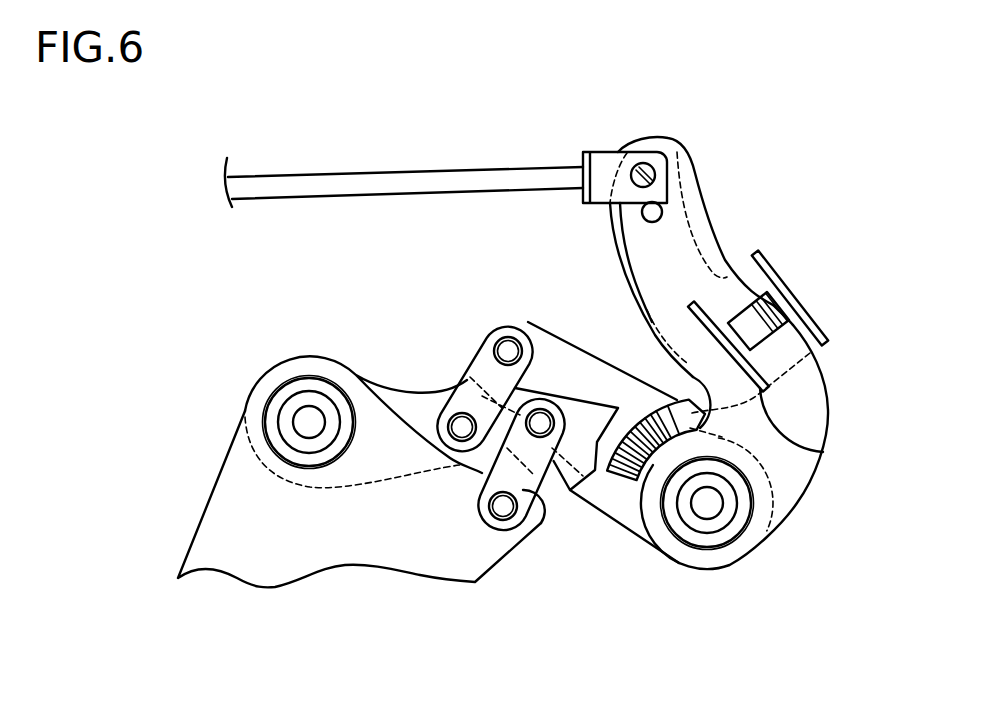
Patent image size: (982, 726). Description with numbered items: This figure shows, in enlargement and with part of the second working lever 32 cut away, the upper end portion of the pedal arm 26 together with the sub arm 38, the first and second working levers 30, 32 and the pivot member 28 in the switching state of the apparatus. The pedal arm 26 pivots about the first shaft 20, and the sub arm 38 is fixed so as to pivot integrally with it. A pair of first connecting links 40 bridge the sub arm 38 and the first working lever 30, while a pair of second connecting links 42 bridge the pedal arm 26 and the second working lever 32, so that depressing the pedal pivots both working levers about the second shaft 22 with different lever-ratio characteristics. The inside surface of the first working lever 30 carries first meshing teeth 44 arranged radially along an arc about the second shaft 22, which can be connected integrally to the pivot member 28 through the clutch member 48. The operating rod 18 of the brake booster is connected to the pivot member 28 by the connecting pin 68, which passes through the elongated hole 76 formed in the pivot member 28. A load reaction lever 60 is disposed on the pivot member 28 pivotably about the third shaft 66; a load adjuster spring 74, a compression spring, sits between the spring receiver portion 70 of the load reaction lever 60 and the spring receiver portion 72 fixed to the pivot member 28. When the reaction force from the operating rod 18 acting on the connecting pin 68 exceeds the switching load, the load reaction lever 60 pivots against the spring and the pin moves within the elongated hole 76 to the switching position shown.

The operating rod 18 is at (327, 185).
The first shaft 20 is at (309, 422).
The second shaft 22 is at (705, 508).
The pedal arm 26 is at (350, 553).
The pivot member 28 is at (630, 230).
The first working lever 30 is at (545, 347).
The second working lever 32 is at (578, 405).
The sub arm 38 is at (391, 395).
The first connecting links 40 is at (465, 397).
The second connecting links 42 is at (540, 523).
The first meshing teeth 44 is at (623, 483).
The clutch member 48 is at (682, 394).
The load reaction lever 60 is at (841, 349).
The third shaft 66 is at (658, 211).
The connecting pin 68 is at (627, 168).
The spring receiver portion 70 is at (820, 330).
The spring receiver portion 72 is at (825, 452).
The load adjuster spring 74 is at (792, 303).
The elongated hole 76 is at (644, 168).